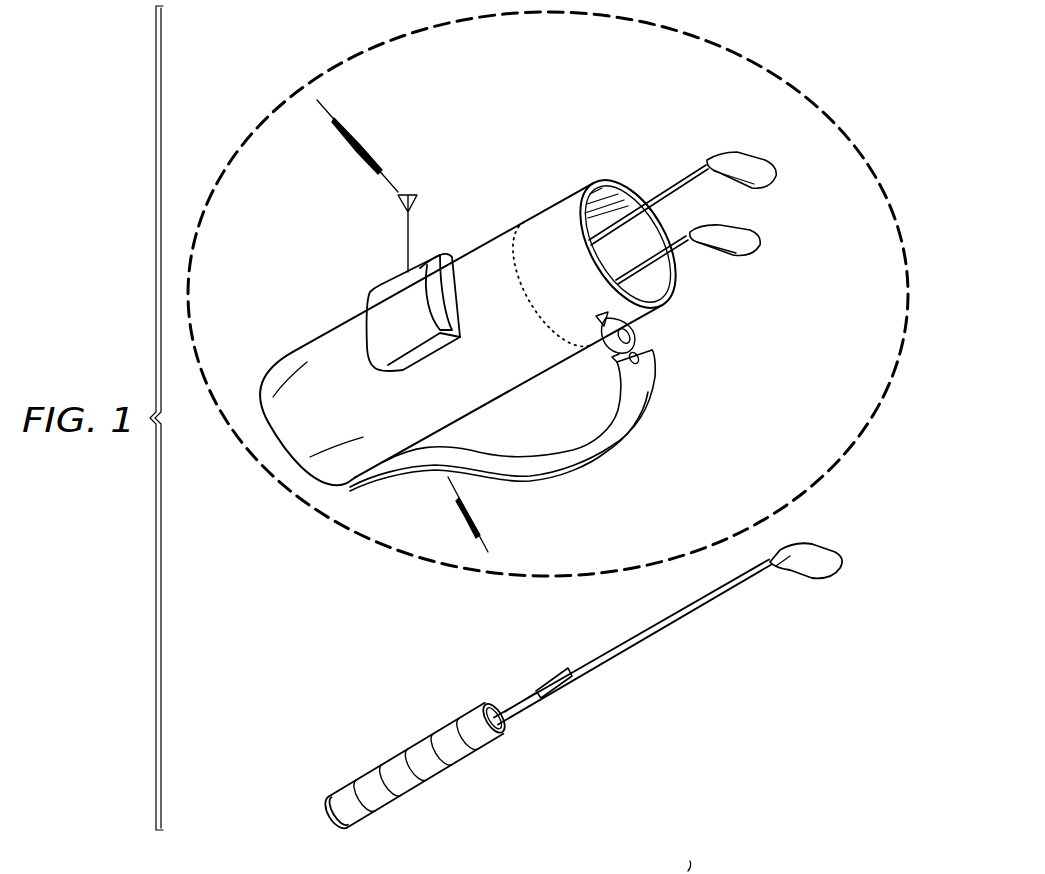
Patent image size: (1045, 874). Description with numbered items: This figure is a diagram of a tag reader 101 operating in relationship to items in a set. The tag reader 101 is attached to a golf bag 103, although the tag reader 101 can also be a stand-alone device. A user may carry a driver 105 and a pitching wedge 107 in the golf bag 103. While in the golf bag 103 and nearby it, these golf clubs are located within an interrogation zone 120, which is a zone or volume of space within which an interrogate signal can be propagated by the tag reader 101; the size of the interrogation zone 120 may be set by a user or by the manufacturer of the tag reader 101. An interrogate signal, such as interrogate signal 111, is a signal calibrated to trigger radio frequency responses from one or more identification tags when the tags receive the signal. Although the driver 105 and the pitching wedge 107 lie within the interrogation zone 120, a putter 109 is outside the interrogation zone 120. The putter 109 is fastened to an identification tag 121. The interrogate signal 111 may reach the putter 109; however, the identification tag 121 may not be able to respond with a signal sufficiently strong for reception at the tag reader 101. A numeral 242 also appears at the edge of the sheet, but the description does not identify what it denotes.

The interrogation zone 120 is at (749, 59).
The tag reader 101 is at (385, 290).
The golf bag 103 is at (318, 338).
The driver 105 is at (750, 152).
The pitching wedge 107 is at (723, 250).
The putter 109 is at (691, 613).
The interrogate signal 111 is at (338, 126).
The identification tag 121 is at (553, 674).
The reference element 242 is at (698, 850).